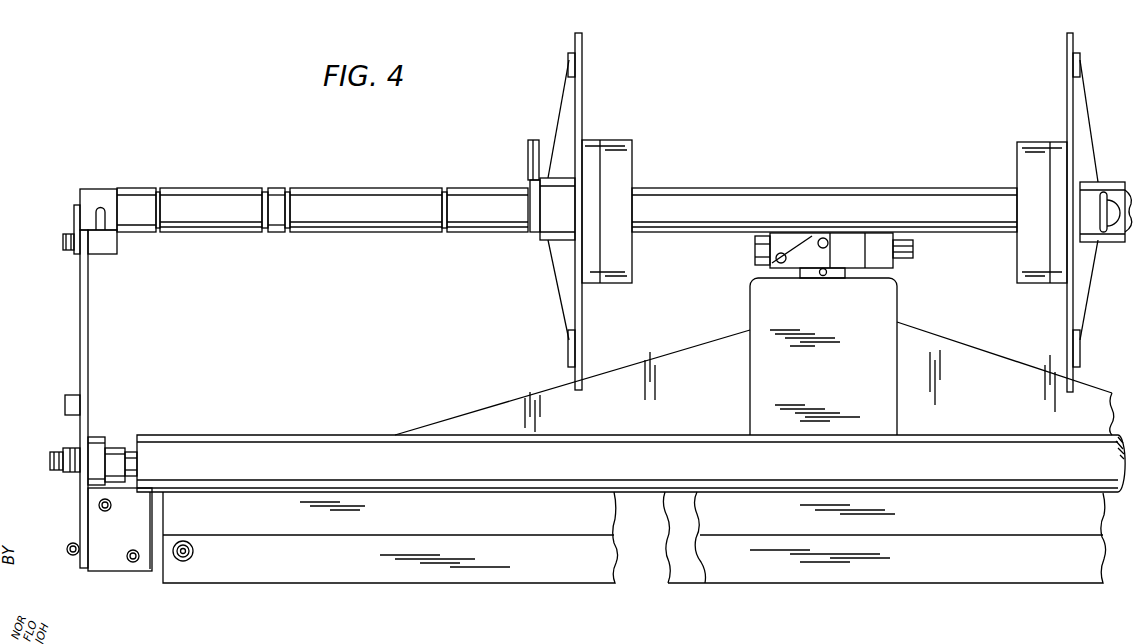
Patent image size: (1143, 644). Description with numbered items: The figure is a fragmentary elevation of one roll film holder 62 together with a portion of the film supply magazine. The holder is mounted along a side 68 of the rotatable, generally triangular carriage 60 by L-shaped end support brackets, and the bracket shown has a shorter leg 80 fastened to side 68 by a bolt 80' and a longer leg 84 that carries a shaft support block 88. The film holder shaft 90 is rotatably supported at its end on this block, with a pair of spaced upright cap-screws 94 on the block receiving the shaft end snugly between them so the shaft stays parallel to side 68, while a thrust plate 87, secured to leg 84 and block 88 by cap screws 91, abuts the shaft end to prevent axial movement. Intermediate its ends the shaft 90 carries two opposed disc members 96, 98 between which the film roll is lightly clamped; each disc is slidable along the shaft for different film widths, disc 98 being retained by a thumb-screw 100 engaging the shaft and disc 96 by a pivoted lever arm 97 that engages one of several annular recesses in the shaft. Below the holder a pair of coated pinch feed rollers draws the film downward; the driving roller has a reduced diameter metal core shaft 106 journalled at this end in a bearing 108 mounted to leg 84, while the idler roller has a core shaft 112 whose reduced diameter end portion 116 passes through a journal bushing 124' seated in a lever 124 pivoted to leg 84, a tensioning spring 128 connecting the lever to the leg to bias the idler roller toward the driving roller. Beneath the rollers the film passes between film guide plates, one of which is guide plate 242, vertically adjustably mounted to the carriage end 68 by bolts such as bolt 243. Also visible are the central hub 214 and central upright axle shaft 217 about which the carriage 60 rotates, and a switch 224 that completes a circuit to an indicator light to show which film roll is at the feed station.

The carriage 60 is at (712, 391).
The roll film holder 62 is at (545, 319).
The side of carriage 68 is at (108, 572).
The shorter leg of bracket 80 is at (137, 575).
The bolt 80' is at (121, 513).
The longer leg of bracket 84 is at (88, 314).
The thrust plate 87 is at (77, 255).
The shaft support block 88 is at (107, 248).
The film holder shaft 90 is at (812, 180).
The cap screws 91 is at (63, 241).
The cap-screws 94 is at (100, 207).
The disc member 96 is at (582, 40).
The pivoted lever arm 97 is at (530, 185).
The disc member 98 is at (1067, 45).
The thumb-screw 100 is at (1108, 196).
The core shaft 106 is at (131, 462).
The bearing 108 is at (94, 437).
The core shaft 112 is at (120, 442).
The reduced diameter end portion 116 is at (50, 460).
The lever 124 is at (52, 391).
The journal bushing 124' is at (56, 474).
The tensioning spring 128 is at (70, 543).
The central hub 214 is at (898, 292).
The central upright axle shaft 217 is at (828, 274).
The switch 224 is at (755, 249).
The film guide plate 242 is at (700, 576).
The bolt 243 is at (193, 551).